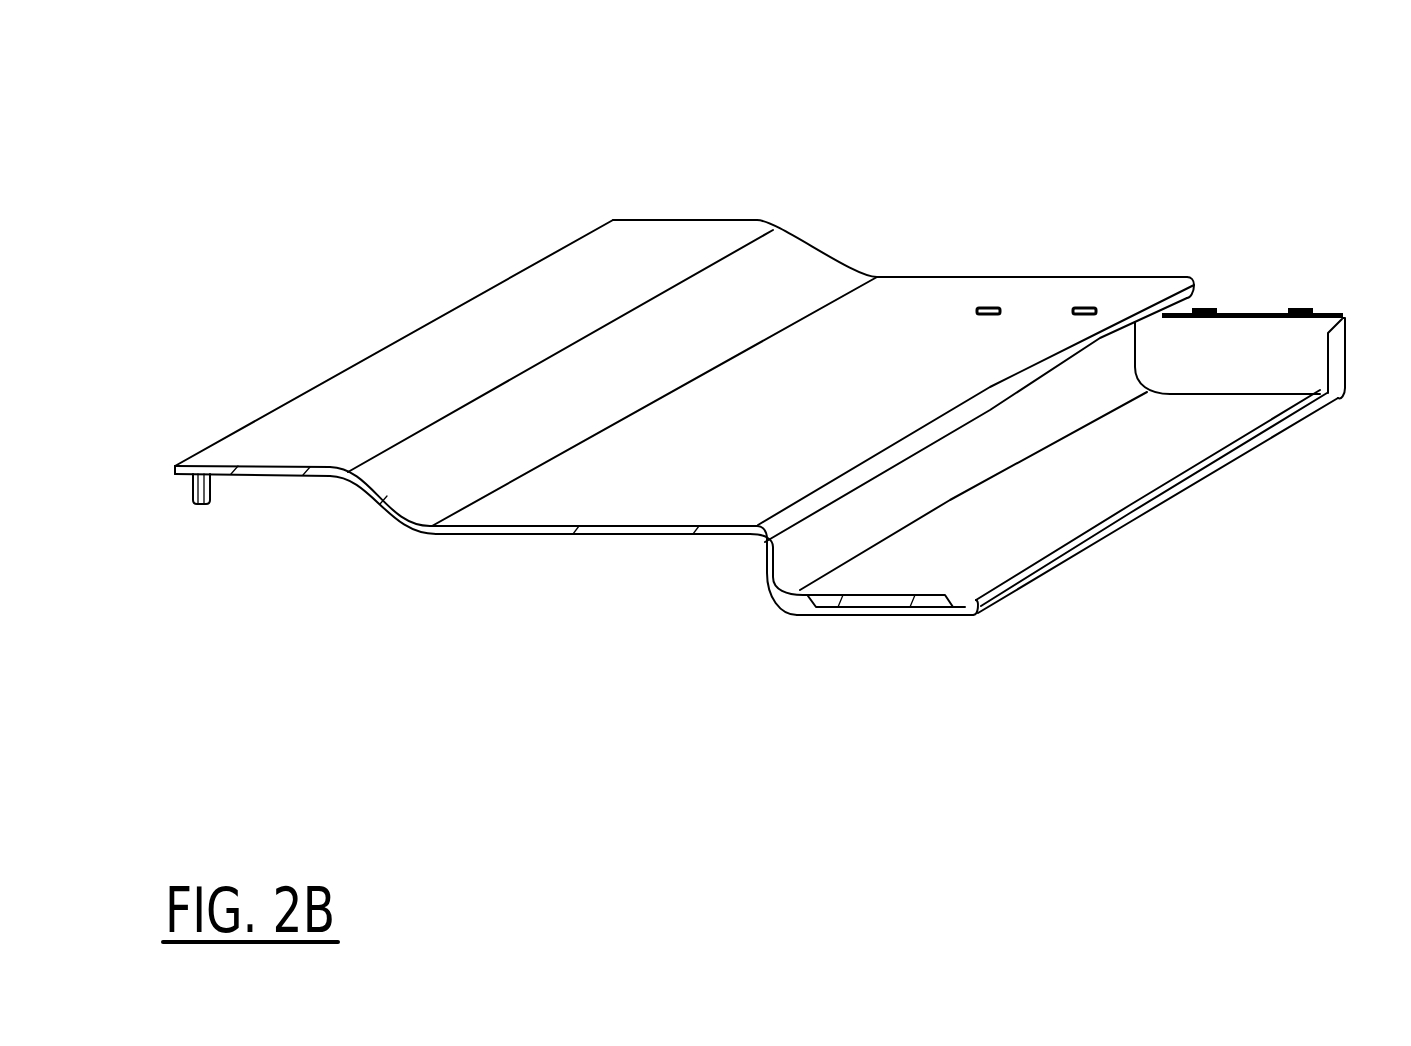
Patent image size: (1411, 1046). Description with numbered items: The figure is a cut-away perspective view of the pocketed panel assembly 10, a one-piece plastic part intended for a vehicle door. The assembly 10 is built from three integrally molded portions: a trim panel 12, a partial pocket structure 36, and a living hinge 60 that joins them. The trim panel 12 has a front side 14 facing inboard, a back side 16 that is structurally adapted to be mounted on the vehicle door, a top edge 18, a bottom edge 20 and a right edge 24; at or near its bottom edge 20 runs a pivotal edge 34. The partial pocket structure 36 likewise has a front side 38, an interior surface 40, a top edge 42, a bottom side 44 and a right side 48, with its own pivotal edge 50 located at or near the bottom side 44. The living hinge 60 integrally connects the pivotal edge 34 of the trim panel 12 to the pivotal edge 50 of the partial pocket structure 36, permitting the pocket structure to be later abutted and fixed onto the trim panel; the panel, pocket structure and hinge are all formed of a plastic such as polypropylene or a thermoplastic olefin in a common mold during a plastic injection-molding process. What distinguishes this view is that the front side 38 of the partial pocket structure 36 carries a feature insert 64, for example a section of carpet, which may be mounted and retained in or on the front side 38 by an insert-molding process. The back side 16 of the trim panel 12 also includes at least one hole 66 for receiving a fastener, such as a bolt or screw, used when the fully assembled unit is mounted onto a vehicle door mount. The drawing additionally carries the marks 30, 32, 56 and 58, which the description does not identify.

The pocketed panel assembly 10 is at (150, 110).
The trim panel 12 is at (700, 212).
The front side 14 is at (592, 366).
The back side 16 is at (637, 540).
The top edge 18 is at (393, 344).
The bottom edge 20 is at (1200, 290).
The right edge 24 is at (830, 258).
The slot 30 is at (985, 302).
The slot 32 is at (1085, 302).
The pivotal edge 34 is at (843, 478).
The partial pocket structure 36 is at (1170, 520).
The front side 38 is at (1080, 552).
The interior surface 40 is at (1040, 492).
The top edge 42 is at (1265, 452).
The bottom side 44 is at (757, 568).
The right side 48 is at (1295, 305).
The pivotal edge 50 is at (905, 465).
The end wall 56 is at (1340, 305).
The tab 58 is at (1208, 306).
The living hinge 60 is at (968, 414).
The feature insert 64 is at (875, 622).
The hole 66 is at (200, 510).